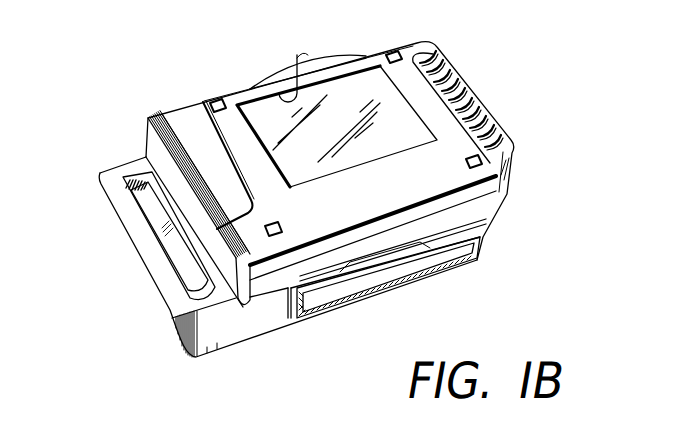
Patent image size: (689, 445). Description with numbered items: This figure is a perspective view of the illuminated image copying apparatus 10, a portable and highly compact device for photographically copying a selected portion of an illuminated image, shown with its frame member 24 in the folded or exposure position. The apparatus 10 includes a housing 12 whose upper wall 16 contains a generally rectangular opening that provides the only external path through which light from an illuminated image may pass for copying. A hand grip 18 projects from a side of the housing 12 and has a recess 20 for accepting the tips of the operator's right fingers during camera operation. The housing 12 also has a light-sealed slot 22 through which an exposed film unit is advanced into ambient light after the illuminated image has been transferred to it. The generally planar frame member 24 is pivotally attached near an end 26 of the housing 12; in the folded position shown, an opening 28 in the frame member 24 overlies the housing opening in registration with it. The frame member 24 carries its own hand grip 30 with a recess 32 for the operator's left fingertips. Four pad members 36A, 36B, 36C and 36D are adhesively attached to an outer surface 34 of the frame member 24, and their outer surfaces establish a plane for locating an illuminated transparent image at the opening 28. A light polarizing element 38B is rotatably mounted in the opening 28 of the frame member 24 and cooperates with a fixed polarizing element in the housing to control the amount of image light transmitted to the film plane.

The illuminated image copying apparatus 10 is at (563, 132).
The housing 12 is at (147, 118).
The upper wall 16 is at (180, 107).
The hand grip 18 is at (100, 173).
The recess 20 is at (182, 263).
The light-sealed slot 22 is at (400, 284).
The frame member 24 is at (333, 60).
The end 26 is at (470, 205).
The opening 28 is at (297, 55).
The hand grip 30 is at (443, 58).
The recess 32 is at (462, 92).
The outer surface 34 is at (313, 72).
The pad member 36A is at (212, 99).
The pad member 36B is at (393, 53).
The pad member 36C is at (275, 225).
The pad member 36D is at (466, 159).
The light polarizing element 38B is at (300, 57).